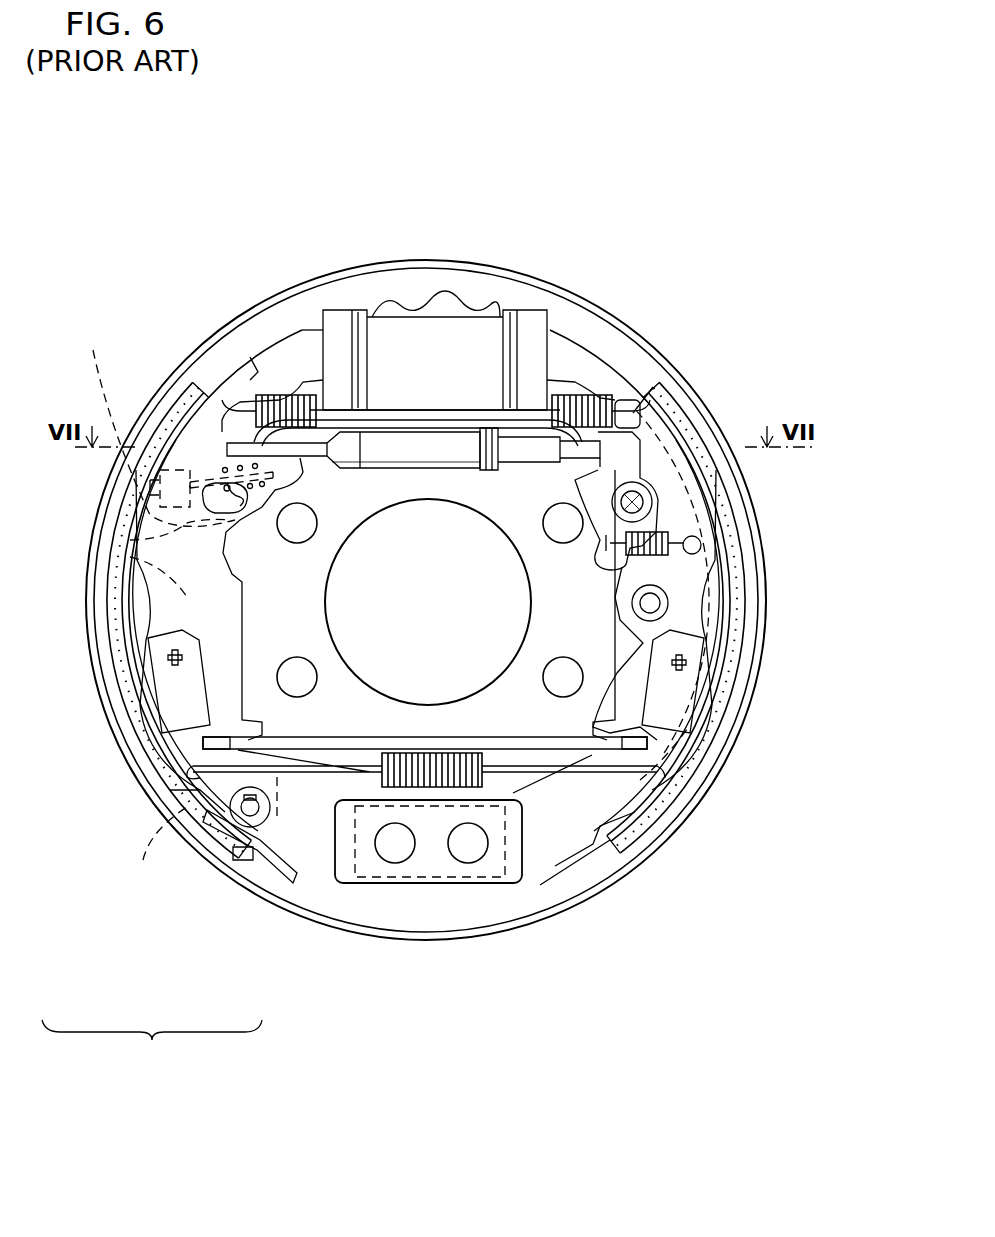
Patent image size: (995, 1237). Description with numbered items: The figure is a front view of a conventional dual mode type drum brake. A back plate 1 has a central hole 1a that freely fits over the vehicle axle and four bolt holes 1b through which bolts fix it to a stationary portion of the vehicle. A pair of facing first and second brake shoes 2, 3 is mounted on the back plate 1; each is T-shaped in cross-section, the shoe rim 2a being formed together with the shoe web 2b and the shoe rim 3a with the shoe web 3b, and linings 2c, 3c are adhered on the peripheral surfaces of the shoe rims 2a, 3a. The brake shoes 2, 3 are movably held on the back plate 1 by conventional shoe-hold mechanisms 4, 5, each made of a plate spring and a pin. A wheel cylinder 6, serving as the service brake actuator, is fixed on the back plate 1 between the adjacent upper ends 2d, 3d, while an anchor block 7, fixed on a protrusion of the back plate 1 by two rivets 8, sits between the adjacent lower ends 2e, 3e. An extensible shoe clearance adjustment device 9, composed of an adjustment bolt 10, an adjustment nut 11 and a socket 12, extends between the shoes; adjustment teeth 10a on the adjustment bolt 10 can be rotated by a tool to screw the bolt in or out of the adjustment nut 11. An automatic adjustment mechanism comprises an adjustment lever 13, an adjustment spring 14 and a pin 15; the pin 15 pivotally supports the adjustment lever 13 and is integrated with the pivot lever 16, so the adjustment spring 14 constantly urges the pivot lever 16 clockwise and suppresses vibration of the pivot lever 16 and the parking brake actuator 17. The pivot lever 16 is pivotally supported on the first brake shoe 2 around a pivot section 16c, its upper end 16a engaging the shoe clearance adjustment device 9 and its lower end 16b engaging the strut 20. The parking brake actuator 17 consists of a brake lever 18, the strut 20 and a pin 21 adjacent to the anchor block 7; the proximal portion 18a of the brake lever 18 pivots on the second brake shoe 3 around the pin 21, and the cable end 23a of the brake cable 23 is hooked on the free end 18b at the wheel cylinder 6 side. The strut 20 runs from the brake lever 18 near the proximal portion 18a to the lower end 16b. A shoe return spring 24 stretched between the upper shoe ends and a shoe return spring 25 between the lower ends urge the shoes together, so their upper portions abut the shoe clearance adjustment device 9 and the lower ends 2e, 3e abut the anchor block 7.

The back plate 1 is at (660, 350).
The central hole 1a is at (326, 596).
The bolt holes 1b is at (305, 537).
The first brake shoe 2 is at (625, 595).
The shoe rim 2a is at (620, 795).
The shoe web 2b is at (660, 835).
The lining 2c is at (630, 860).
The upper end 2d is at (565, 340).
The lower end 2e is at (580, 870).
The second brake shoe 3 is at (201, 610).
The shoe rim 3a is at (200, 472).
The shoe web 3b is at (133, 487).
The lining 3c is at (222, 456).
The upper end 3d is at (305, 335).
The lower end 3e is at (380, 790).
The shoe-hold mechanism 4 is at (705, 690).
The shoe-hold mechanism 5 is at (148, 660).
The wheel cylinder 6 is at (405, 318).
The anchor block 7 is at (433, 885).
The rivets 8 is at (395, 850).
The shoe clearance adjustment device 9 is at (470, 428).
The adjustment bolt 10 is at (440, 455).
The adjustment teeth 10a is at (490, 480).
The adjustment nut 11 is at (400, 458).
The socket 12 is at (510, 462).
The adjustment lever 13 is at (696, 478).
The adjustment spring 14 is at (695, 540).
The pin 15 is at (650, 502).
The pivot lever 16 is at (712, 589).
The upper end 16a is at (700, 400).
The lower end 16b is at (660, 730).
The pivot section 16c is at (665, 600).
The parking brake actuator 17 is at (169, 705).
The brake lever 18 is at (158, 678).
The proximal portion 18a is at (151, 850).
The free end 18b is at (100, 395).
The strut 20 is at (300, 800).
The pin 21 is at (245, 820).
The brake cable 23 is at (223, 458).
The cable end 23a is at (165, 500).
The shoe return spring 24 is at (578, 400).
The shoe return spring 25 is at (435, 790).